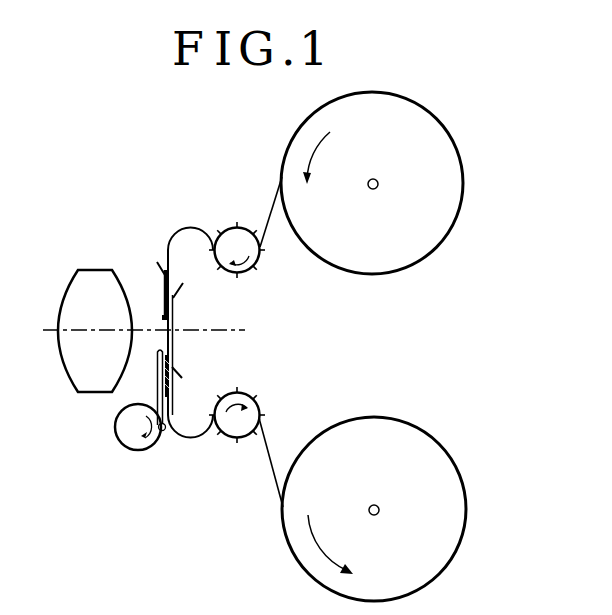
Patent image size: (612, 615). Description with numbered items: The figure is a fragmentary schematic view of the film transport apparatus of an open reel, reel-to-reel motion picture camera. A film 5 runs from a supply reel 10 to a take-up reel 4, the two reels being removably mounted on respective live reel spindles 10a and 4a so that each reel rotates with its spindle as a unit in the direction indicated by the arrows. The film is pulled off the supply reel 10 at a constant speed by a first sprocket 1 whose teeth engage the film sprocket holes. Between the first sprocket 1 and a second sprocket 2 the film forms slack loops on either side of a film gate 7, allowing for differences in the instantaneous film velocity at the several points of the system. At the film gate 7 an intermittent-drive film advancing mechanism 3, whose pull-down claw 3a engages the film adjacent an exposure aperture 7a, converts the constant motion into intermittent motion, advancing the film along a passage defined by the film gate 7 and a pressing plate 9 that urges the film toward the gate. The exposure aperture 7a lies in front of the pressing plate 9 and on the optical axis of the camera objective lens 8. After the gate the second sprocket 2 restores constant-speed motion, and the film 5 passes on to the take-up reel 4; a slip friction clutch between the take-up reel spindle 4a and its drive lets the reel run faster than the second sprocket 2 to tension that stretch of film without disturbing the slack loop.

The first sprocket 1 is at (245, 266).
The second sprocket 2 is at (247, 398).
The intermittent-drive film advancing mechanism 3 is at (120, 437).
The pull-down claw 3a is at (164, 431).
The take-up reel 4 is at (423, 575).
The take-up reel spindle 4a is at (379, 507).
The film 5 is at (270, 470).
The film gate 7 is at (169, 387).
The exposure aperture 7a is at (173, 341).
The camera objective lens 8 is at (92, 281).
The pressing plate 9 is at (173, 317).
The supply reel 10 is at (427, 248).
The supply reel spindle 10a is at (378, 186).